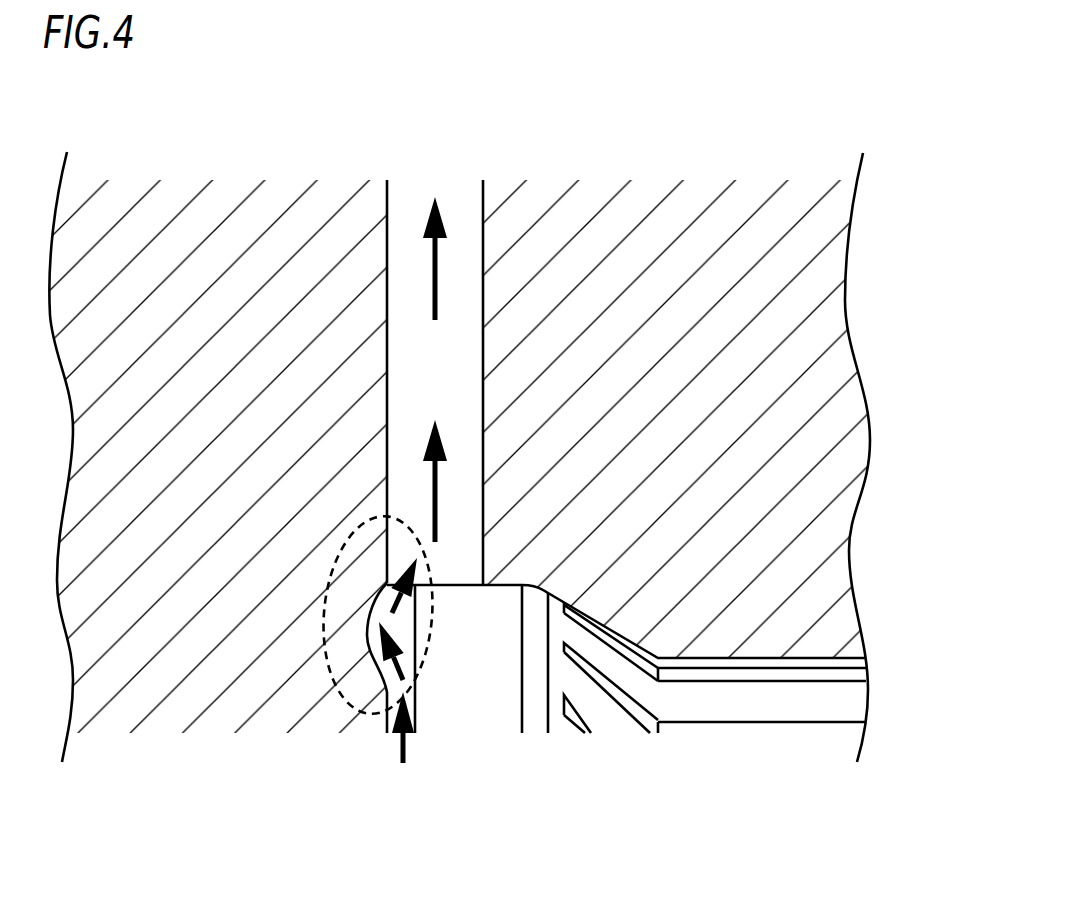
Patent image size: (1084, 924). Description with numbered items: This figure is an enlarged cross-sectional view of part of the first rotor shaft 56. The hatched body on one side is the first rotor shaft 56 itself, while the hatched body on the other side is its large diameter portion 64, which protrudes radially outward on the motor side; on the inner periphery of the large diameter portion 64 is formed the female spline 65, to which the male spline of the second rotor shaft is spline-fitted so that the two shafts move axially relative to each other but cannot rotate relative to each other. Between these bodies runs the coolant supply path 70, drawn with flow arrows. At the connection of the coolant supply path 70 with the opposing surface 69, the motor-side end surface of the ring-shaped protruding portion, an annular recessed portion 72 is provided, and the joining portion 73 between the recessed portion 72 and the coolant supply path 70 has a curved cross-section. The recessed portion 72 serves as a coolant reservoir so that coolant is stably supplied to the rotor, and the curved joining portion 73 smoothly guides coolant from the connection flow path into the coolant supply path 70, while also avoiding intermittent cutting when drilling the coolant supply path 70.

The first rotor shaft 56 is at (215, 210).
The large diameter portion 64 is at (795, 308).
The female spline 65 is at (758, 706).
The opposing surface 69 is at (376, 704).
The coolant supply path 70 is at (465, 237).
The recessed portion 72 is at (373, 615).
The joining portion 73 is at (417, 592).